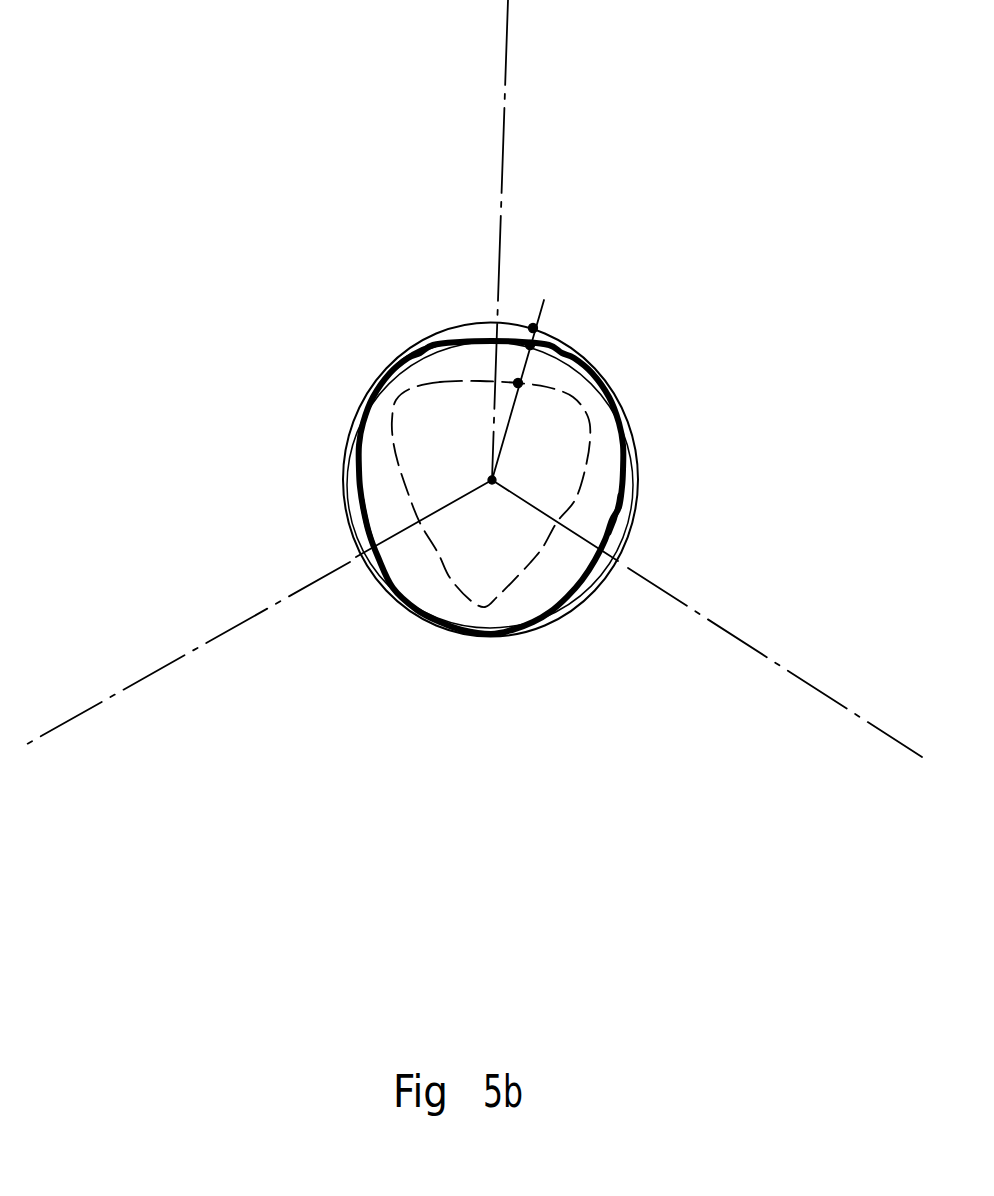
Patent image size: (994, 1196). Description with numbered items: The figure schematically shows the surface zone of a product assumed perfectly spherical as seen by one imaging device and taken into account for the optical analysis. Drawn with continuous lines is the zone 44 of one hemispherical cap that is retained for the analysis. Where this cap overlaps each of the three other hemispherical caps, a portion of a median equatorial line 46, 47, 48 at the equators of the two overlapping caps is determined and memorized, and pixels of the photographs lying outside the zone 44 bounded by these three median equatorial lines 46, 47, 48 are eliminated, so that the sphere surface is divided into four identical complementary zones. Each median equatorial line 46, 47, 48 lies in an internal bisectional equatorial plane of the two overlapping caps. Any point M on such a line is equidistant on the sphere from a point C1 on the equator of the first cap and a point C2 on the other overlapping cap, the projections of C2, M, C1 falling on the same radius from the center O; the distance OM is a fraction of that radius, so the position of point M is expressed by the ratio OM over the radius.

The zone 44 is at (463, 547).
The median equatorial line 46 is at (355, 530).
The median equatorial line 47 is at (423, 365).
The median equatorial line 48 is at (618, 510).
The center point O is at (492, 480).
The point M is at (530, 345).
The point C1 is at (537, 327).
The point C2 is at (518, 383).